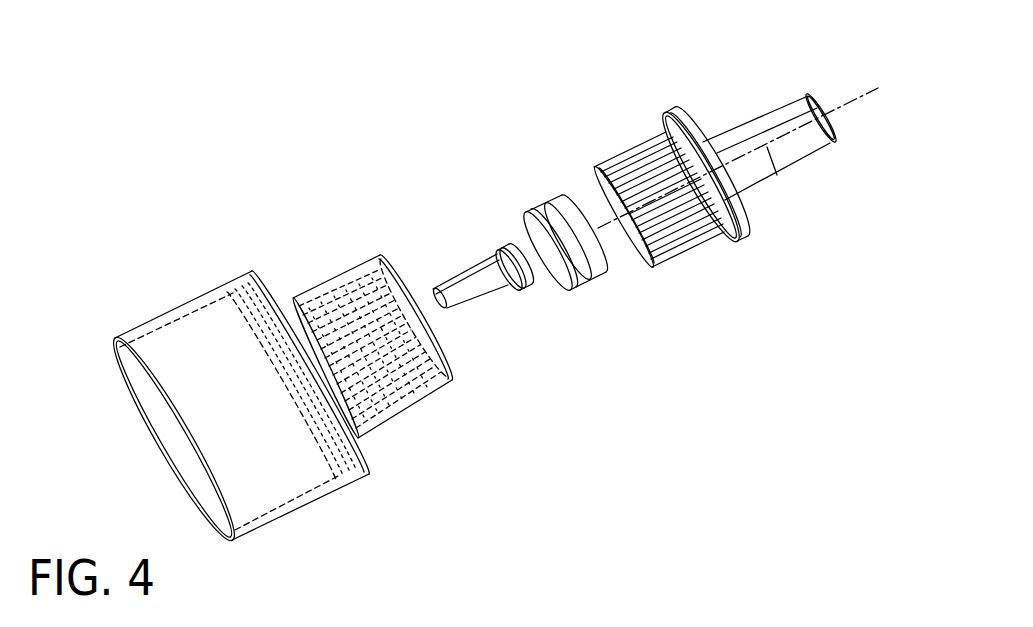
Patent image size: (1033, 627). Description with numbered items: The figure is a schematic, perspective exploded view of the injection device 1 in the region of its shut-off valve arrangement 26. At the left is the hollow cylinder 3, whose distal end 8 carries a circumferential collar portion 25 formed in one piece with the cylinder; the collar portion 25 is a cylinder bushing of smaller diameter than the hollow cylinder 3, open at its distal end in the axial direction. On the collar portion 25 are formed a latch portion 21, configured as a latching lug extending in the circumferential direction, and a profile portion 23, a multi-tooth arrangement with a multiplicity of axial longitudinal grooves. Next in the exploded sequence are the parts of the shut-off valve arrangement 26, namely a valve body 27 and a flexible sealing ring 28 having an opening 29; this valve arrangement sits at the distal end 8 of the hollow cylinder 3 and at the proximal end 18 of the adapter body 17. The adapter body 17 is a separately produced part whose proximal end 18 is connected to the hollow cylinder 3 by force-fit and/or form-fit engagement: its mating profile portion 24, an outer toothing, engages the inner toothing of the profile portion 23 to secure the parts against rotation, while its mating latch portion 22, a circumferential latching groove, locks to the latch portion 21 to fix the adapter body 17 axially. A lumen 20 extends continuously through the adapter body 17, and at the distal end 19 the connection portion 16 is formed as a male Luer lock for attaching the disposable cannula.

The injection device 1 is at (340, 140).
The hollow cylinder 3 is at (161, 313).
The distal end 8 is at (271, 204).
The connection portion 16 is at (792, 100).
The adapter body 17 is at (708, 88).
The proximal end 18 is at (696, 301).
The distal end 19 is at (840, 212).
The lumen 20 is at (777, 175).
The latch portion 21 is at (379, 258).
The mating latch portion 22 is at (662, 125).
The profile portion 23 is at (373, 337).
The mating profile portion 24 is at (668, 262).
The collar portion 25 is at (423, 400).
The shut-off valve arrangement 26 is at (508, 193).
The valve body 27 is at (475, 310).
The sealing ring 28 is at (583, 278).
The opening 29 is at (590, 217).